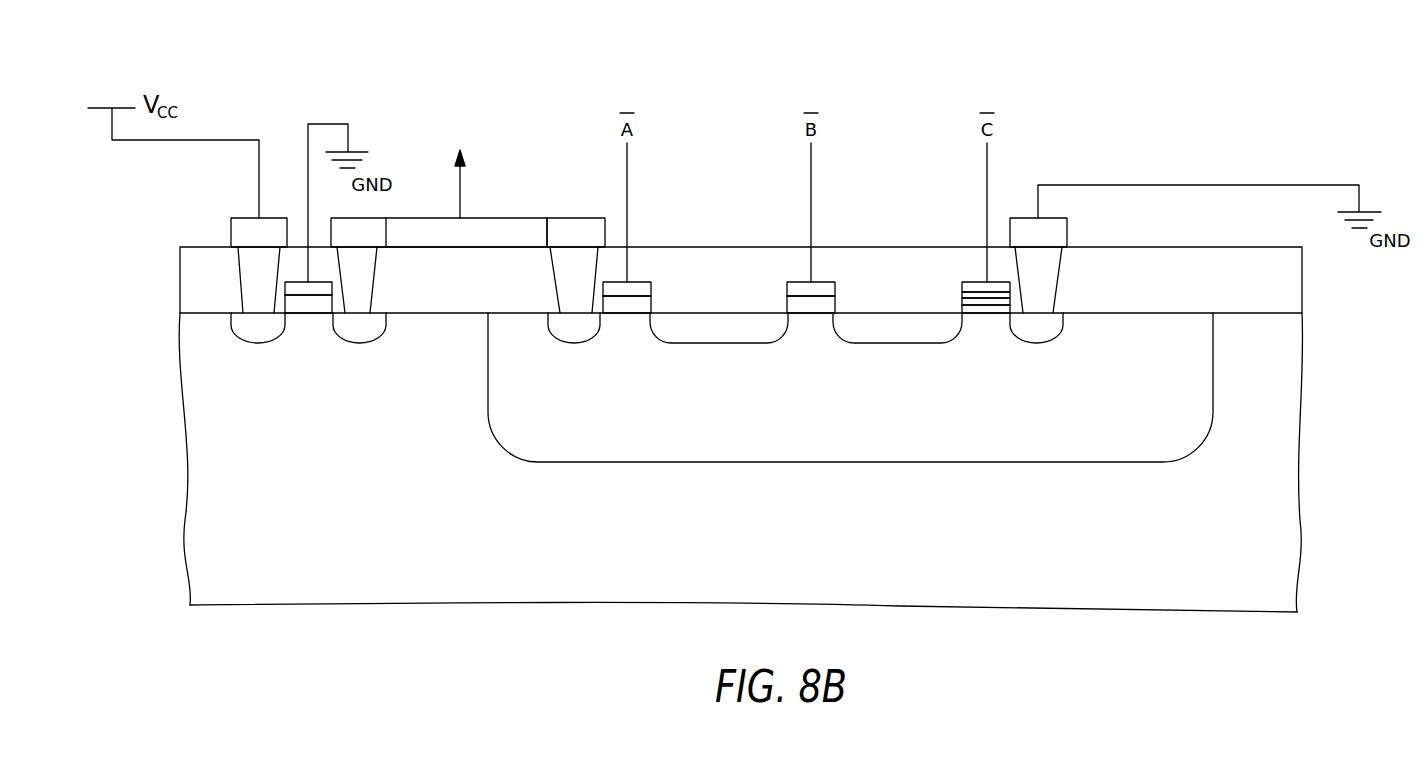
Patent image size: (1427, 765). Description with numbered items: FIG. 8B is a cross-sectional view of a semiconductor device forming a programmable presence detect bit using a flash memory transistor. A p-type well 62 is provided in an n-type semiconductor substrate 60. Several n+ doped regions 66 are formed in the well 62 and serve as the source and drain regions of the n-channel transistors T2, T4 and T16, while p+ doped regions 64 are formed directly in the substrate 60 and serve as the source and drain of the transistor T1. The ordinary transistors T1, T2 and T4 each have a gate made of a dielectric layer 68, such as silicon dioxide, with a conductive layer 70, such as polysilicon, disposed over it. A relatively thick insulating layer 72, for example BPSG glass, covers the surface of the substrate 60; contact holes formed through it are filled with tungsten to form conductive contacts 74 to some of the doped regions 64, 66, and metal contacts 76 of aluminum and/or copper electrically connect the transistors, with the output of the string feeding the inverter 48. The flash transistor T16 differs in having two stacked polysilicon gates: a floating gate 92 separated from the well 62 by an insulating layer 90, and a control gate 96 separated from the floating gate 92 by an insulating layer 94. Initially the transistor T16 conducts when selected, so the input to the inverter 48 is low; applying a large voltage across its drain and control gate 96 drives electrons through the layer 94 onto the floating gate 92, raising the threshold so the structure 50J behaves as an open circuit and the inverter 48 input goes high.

The semiconductor substrate 60 is at (1280, 545).
The p-type well 62 is at (1195, 396).
The p+ doped regions 64 is at (252, 330).
The n+ doped regions 66 is at (570, 328).
The dielectric layer 68 is at (295, 308).
The conductive layer 70 is at (283, 290).
The insulating layer 72 is at (1290, 285).
The conductive contacts 74 is at (252, 265).
The metal contacts 76 is at (243, 233).
The inverter 48 is at (462, 140).
The insulating layer 90 is at (962, 309).
The floating gate 92 is at (965, 301).
The insulating layer 94 is at (965, 295).
The control gate 96 is at (968, 287).
The memory cell structure 50J is at (1092, 331).
The transistor T1 is at (314, 360).
The transistor T2 is at (631, 360).
The transistor T4 is at (813, 360).
The flash transistor T16 is at (989, 360).